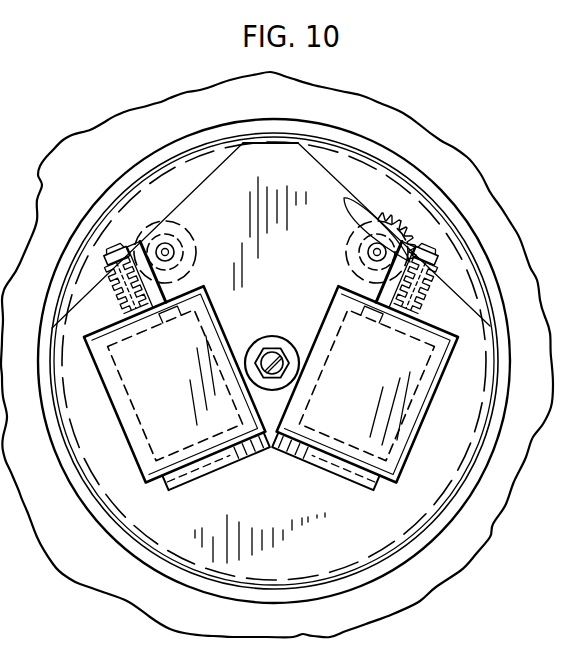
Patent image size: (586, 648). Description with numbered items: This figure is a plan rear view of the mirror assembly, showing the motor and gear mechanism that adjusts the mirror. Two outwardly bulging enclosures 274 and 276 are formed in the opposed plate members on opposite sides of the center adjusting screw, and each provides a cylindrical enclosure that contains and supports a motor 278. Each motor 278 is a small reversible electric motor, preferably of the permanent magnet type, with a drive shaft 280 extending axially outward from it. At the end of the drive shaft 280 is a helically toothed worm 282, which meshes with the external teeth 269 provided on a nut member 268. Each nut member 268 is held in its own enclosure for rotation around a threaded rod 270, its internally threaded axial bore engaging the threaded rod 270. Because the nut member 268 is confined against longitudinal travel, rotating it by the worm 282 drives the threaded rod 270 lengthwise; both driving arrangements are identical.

The nut member 268 is at (139, 243).
The external teeth 269 is at (398, 224).
The threaded rod 270 is at (173, 247).
The outwardly bulging enclosure 274 is at (423, 430).
The outwardly bulging enclosure 276 is at (112, 403).
The motor 278 is at (138, 441).
The drive shaft 280 is at (115, 314).
The helically toothed worm 282 is at (117, 257).